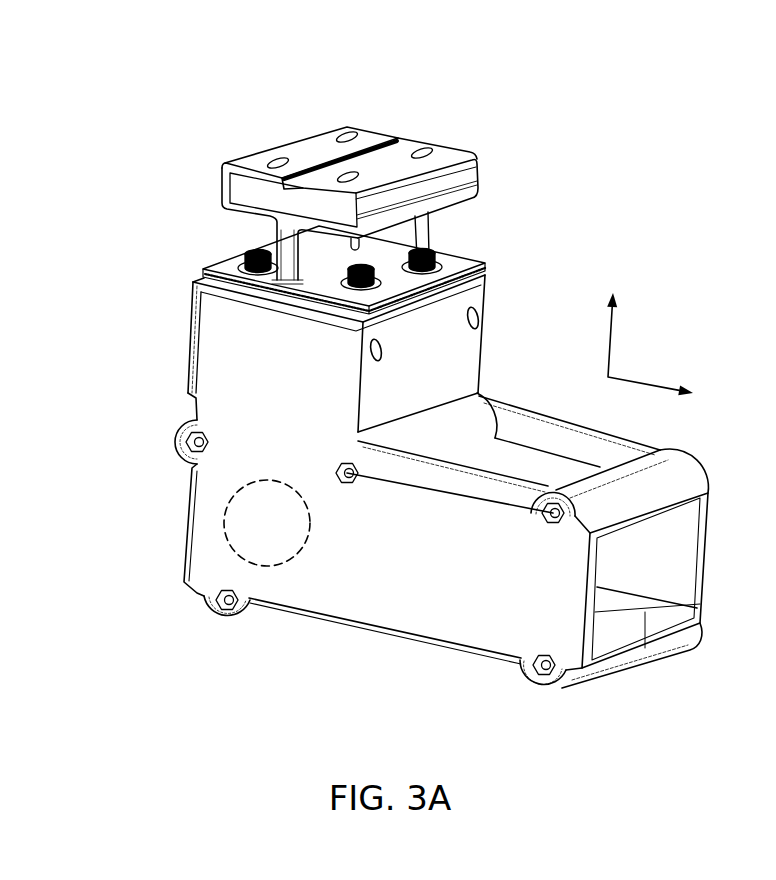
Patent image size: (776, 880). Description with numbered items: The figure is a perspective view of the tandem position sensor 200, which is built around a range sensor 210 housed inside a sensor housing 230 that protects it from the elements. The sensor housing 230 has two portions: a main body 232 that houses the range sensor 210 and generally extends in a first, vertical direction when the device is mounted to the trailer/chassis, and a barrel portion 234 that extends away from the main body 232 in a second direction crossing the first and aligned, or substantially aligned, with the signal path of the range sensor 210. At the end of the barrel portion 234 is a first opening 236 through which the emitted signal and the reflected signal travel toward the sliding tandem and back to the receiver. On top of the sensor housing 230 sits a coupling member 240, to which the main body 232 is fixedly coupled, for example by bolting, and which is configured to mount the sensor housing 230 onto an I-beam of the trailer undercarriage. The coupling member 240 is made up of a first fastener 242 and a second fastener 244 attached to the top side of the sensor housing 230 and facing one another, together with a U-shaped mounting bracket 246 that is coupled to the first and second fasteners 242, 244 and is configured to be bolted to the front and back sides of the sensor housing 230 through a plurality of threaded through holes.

The tandem position sensor 200 is at (645, 164).
The range sensor 210 is at (272, 478).
The sensor housing 230 is at (127, 500).
The main body 232 is at (197, 467).
The barrel portion 234 is at (432, 572).
The first opening 236 is at (650, 576).
The coupling member 240 is at (497, 93).
The first fastener 242 is at (305, 150).
The second fastener 244 is at (443, 150).
The U-shaped mounting bracket 246 is at (411, 322).